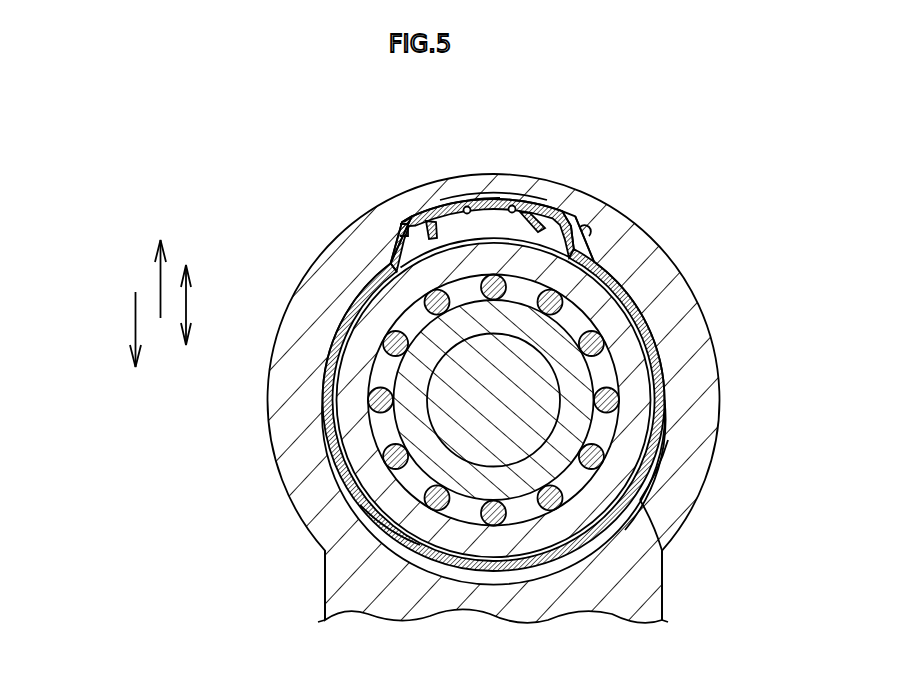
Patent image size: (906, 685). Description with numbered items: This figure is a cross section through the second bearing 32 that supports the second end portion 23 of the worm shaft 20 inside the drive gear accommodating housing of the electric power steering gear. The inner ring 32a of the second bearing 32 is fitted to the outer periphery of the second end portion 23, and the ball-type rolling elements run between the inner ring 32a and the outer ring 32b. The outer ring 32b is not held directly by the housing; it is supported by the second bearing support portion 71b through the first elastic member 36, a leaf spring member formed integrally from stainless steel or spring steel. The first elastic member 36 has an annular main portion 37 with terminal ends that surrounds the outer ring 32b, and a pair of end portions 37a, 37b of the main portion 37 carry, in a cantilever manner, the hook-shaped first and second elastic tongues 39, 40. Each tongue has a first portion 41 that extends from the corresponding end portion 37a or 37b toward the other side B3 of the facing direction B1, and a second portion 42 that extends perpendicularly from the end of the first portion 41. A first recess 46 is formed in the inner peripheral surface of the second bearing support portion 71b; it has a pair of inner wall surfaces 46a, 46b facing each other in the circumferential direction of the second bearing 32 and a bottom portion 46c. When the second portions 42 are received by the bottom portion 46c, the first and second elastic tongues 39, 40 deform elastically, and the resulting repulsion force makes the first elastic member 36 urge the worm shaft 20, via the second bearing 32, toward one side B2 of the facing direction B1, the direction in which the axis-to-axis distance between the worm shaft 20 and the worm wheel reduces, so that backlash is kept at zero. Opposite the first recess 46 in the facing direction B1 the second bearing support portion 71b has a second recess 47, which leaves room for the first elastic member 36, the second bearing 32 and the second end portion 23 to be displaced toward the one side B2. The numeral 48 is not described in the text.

The worm shaft 20 is at (422, 398).
The second end portion 23 is at (446, 415).
The second bearing 32 is at (417, 540).
The inner ring 32a is at (387, 507).
The outer ring 32b is at (327, 546).
The first elastic member 36 is at (663, 397).
The annular main portion 37 is at (667, 383).
The end portion of the main portion 37a is at (600, 247).
The end portion of the main portion 37b is at (377, 270).
The first elastic tongue 39 is at (485, 192).
The second elastic tongue 40 is at (413, 220).
The first portion 41 is at (397, 243).
The second portion 42 is at (417, 210).
The first recess 46 is at (513, 200).
The inner wall surface 46a is at (583, 227).
The inner wall surface 46b is at (413, 213).
The bottom portion 46c is at (462, 200).
The second recess 47 is at (607, 530).
The tab 48 is at (567, 210).
The second bearing support portion 71b is at (633, 483).
The facing direction B1 is at (186, 303).
The one side of the facing direction B2 is at (135, 328).
The other side of the facing direction B3 is at (160, 278).